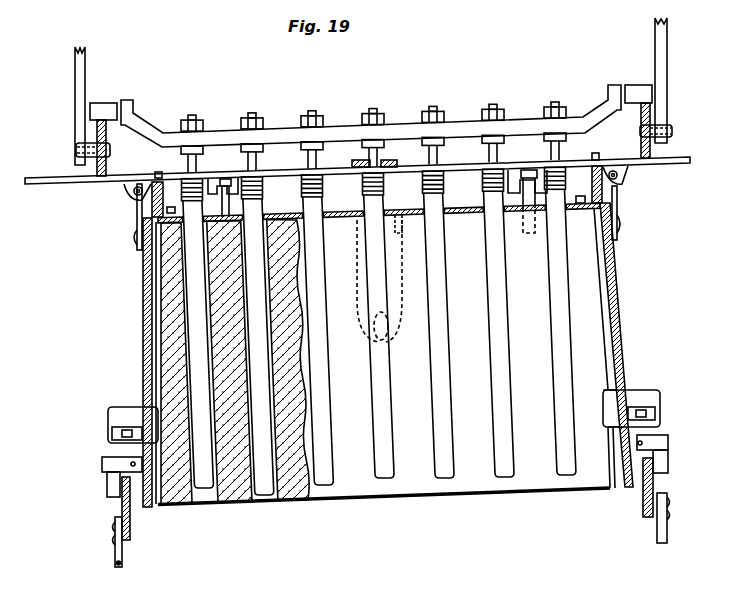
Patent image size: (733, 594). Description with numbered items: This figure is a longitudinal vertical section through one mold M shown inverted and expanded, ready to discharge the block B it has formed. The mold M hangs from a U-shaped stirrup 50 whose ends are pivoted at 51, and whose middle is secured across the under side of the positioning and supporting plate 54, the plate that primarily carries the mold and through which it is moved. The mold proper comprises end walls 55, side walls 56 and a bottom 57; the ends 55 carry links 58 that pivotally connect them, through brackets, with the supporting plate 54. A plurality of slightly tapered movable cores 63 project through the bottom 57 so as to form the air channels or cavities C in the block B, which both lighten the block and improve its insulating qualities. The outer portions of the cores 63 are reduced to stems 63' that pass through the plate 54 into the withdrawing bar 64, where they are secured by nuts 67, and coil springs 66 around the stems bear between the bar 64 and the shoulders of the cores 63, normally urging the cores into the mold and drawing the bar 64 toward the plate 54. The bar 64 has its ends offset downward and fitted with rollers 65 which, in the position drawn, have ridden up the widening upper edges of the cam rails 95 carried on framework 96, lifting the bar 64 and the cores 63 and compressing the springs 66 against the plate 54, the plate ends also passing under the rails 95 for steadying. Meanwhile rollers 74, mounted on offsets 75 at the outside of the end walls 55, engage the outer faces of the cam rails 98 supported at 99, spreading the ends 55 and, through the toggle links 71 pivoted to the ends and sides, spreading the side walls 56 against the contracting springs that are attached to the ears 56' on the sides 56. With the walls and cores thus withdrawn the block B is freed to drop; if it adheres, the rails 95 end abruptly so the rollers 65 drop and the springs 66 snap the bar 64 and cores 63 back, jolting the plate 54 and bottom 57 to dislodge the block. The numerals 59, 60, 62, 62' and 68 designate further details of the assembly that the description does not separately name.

The U-shaped stirrup 50 is at (357, 161).
The pivot 51 is at (393, 339).
The positioning and supporting plate 54 is at (35, 178).
The end walls 55 is at (142, 296).
The side walls 56 is at (402, 356).
The ears 56' is at (389, 404).
The bottom 57 is at (302, 212).
The links 58 is at (137, 215).
The pivot lug 59 is at (125, 196).
The clip 60 is at (232, 186).
The bolt 62 is at (400, 183).
The nut 62' is at (355, 165).
The movable cores 63 is at (379, 366).
The stems 63' is at (373, 135).
The withdrawing bar 64 is at (222, 138).
The rollers 65 is at (103, 106).
The coil springs 66 is at (266, 180).
The nuts 67 is at (511, 132).
The lining plate 68 is at (427, 217).
The links 71 is at (118, 428).
The rollers 74 is at (107, 482).
The offsets 75 is at (103, 461).
The cam rails 95 is at (97, 128).
The framework 96 is at (76, 69).
The cam rails 98 is at (122, 504).
The support 99 is at (115, 548).
The block B is at (236, 498).
The air channels or cavities C is at (268, 500).
The mold M is at (526, 344).